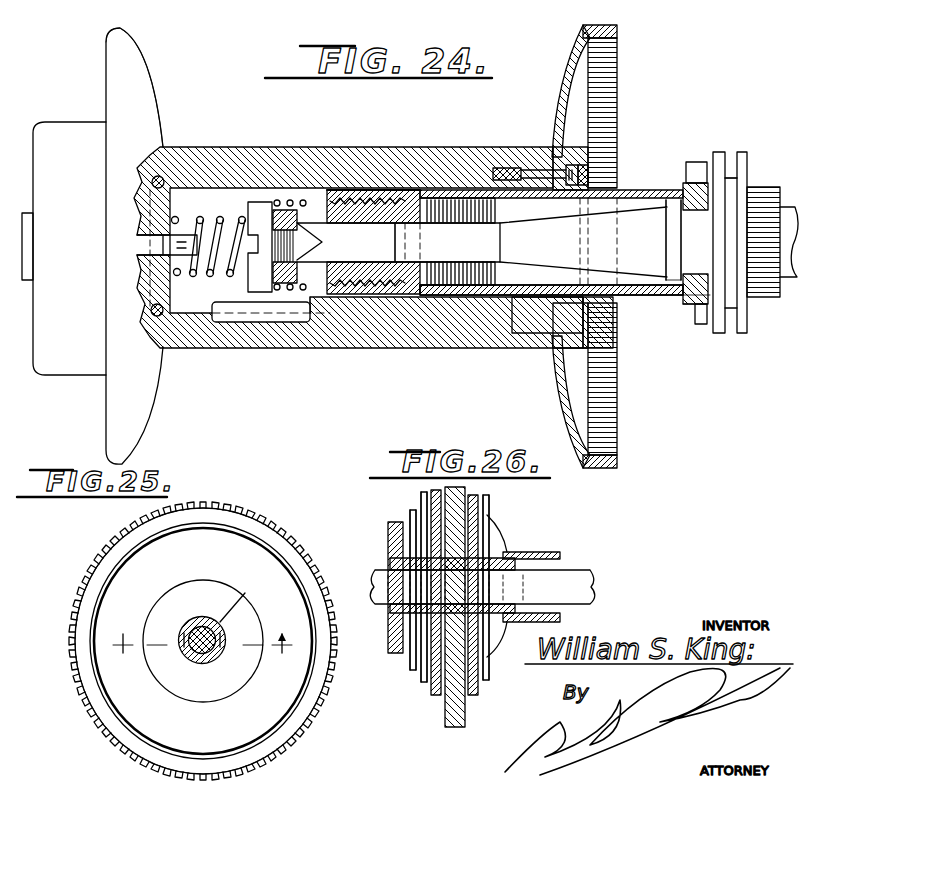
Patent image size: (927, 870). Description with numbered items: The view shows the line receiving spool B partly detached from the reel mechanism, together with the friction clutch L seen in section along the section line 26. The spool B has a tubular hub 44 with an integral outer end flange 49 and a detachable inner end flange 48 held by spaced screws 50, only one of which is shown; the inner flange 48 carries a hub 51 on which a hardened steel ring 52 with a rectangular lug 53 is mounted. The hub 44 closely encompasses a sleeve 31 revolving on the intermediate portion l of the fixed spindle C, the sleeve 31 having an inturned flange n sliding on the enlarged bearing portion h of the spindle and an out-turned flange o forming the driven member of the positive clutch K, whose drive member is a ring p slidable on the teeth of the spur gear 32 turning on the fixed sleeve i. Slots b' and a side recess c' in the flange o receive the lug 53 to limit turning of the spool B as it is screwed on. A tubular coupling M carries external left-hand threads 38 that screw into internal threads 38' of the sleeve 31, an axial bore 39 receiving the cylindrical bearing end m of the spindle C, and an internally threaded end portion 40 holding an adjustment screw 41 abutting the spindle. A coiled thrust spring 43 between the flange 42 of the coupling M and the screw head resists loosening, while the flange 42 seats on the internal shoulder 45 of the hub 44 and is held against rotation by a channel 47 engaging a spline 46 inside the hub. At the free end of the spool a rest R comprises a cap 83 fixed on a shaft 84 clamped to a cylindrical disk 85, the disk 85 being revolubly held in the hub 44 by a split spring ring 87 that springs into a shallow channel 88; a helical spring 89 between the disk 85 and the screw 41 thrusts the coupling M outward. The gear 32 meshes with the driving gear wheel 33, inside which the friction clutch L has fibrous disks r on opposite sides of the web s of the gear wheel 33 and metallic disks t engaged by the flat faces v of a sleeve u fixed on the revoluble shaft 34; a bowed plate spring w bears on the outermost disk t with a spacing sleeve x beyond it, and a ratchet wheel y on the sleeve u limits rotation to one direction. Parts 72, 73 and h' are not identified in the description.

In FIG. 24, the line receiving spool B is at (97, 42).
In FIG. 24, the rest R is at (68, 118).
In FIG. 24, the cap 83 is at (62, 362).
In FIG. 24, the outer end flange 49 is at (143, 78).
In FIG. 24, the tubular hub 44 is at (222, 152).
In FIG. 24, the external lefthand threads 38 is at (360, 318).
In FIG. 24, the cylindrical disk 85 is at (135, 205).
In FIG. 24, the shaft 84 is at (135, 242).
In FIG. 24, the split spring ring 87 is at (163, 150).
In FIG. 24, the shallow channel 88 is at (165, 343).
In FIG. 24, the helical spring 89 is at (209, 232).
In FIG. 24, the adjustment screw 41 is at (258, 262).
In FIG. 24, the coiled thrust spring 43 is at (277, 199).
In FIG. 24, the flange 42 is at (312, 150).
In FIG. 24, the internally threaded end portion 40 is at (398, 242).
In FIG. 24, the tubular coupling M is at (368, 147).
In FIG. 24, the internal shoulder 45 is at (338, 147).
In FIG. 24, the axial bore 39 is at (398, 147).
In FIG. 24, the sleeve 31 is at (456, 148).
In FIG. 24, the spindle C is at (540, 250).
In FIG. 24, the cylindrical end bearing portion m is at (415, 256).
In FIG. 24, the internal threads 38' is at (549, 333).
In FIG. 24, the spline 46 is at (258, 312).
In FIG. 24, the channel 47 is at (302, 322).
In FIG. 24, the screws 50 is at (524, 147).
In FIG. 24, the rectangular lug 53 is at (590, 173).
In FIG. 24, the inner end flange 48 is at (560, 60).
In FIG. 24, the rim cap 73 is at (620, 30).
In FIG. 24, the gear 72 is at (612, 68).
In FIG. 24, the hardened steel ring 52 is at (592, 315).
In FIG. 24, the hub 51 is at (592, 333).
In FIG. 24, the bearing portion h is at (677, 236).
In FIG. 24, the lug h' is at (695, 154).
In FIG. 24, the slots b' is at (701, 335).
In FIG. 24, the out-turned flange o is at (690, 306).
In FIG. 24, the side recess c' is at (679, 327).
In FIG. 24, the intermediate portion l is at (657, 218).
In FIG. 24, the inturned flange n is at (692, 273).
In FIG. 24, the positive clutch K is at (755, 143).
In FIG. 24, the ring p is at (748, 162).
In FIG. 24, the spur gear 32 is at (765, 190).
In FIG. 24, the fixed sleeve i is at (789, 266).
In FIG. 25, the driving gear wheel 33 is at (240, 505).
In FIG. 25, the friction clutch L is at (145, 565).
In FIG. 26, the friction clutch L is at (395, 497).
In FIG. 25, the metallic disks t is at (117, 595).
In FIG. 26, the metallic disks t is at (413, 680).
In FIG. 25, the bowed plate spring w is at (187, 687).
In FIG. 26, the bowed plate spring w is at (500, 527).
In FIG. 25, the sleeve u is at (202, 617).
In FIG. 26, the sleeve u is at (512, 560).
In FIG. 25, the flat faces v is at (182, 635).
In FIG. 25, the section line 26 is at (201, 657).
In FIG. 26, the revoluble shaft 34 is at (582, 568).
In FIG. 26, the spacing sleeve x is at (548, 553).
In FIG. 26, the ratchet wheel y is at (388, 535).
In FIG. 26, the fibrous disks r is at (436, 698).
In FIG. 26, the web s is at (450, 720).